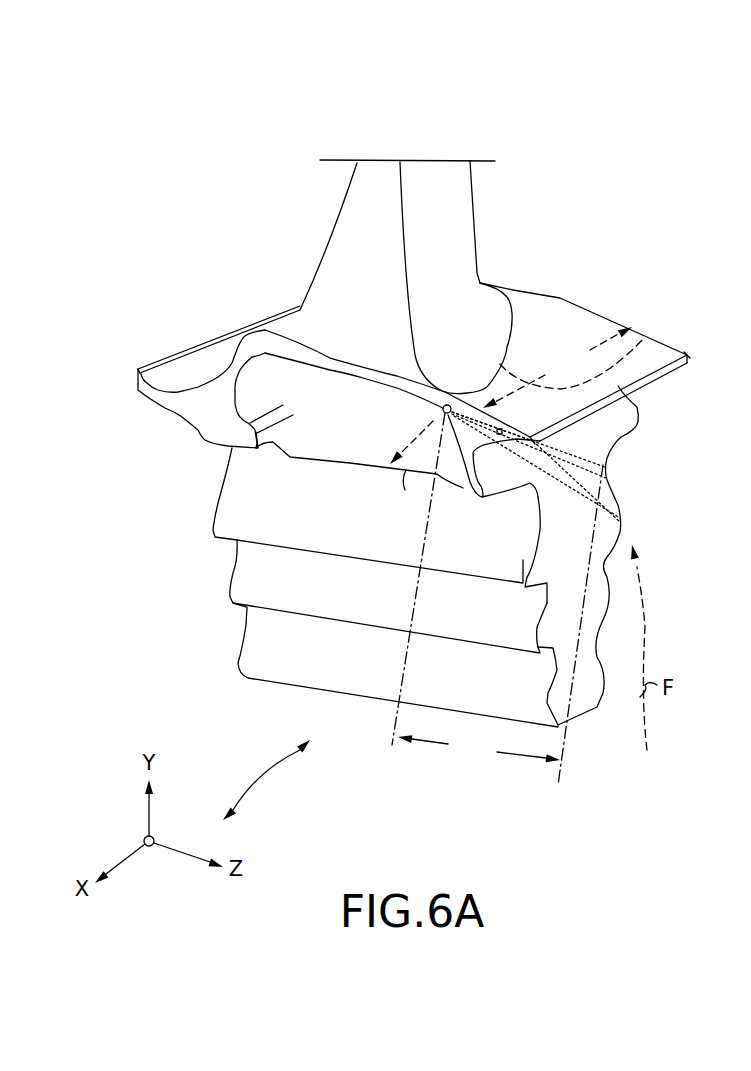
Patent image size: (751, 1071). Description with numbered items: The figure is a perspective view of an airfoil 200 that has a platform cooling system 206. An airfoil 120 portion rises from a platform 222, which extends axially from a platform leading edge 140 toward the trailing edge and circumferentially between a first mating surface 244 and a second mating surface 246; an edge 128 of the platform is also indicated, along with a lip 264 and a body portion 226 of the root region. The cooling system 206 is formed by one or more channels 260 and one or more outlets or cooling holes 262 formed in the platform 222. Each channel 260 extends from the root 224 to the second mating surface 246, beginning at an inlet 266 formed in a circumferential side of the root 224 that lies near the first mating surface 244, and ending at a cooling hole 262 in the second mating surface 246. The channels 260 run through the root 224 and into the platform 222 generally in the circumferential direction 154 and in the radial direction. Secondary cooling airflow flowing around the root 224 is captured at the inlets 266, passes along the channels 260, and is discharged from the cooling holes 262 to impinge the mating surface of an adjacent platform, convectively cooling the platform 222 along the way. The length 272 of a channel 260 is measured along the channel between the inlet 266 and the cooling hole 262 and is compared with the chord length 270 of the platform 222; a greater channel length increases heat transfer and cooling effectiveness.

The airfoil 200 is at (170, 196).
The airfoil 120 is at (410, 273).
The cooling system 206 is at (542, 312).
The platform edge 128 is at (657, 347).
The platform leading edge 140 is at (187, 340).
The platform 222 is at (133, 303).
The chord length 270 is at (564, 367).
The first mating surface 244 is at (680, 342).
The second mating surface 246 is at (392, 382).
The cooling hole 262 is at (443, 412).
The lip 264 is at (622, 430).
The inlet 266 is at (607, 477).
The channel 260 is at (592, 492).
The root body 226 is at (366, 609).
The root 224 is at (270, 630).
The length 272 is at (479, 748).
The circumferential direction 154 is at (272, 770).